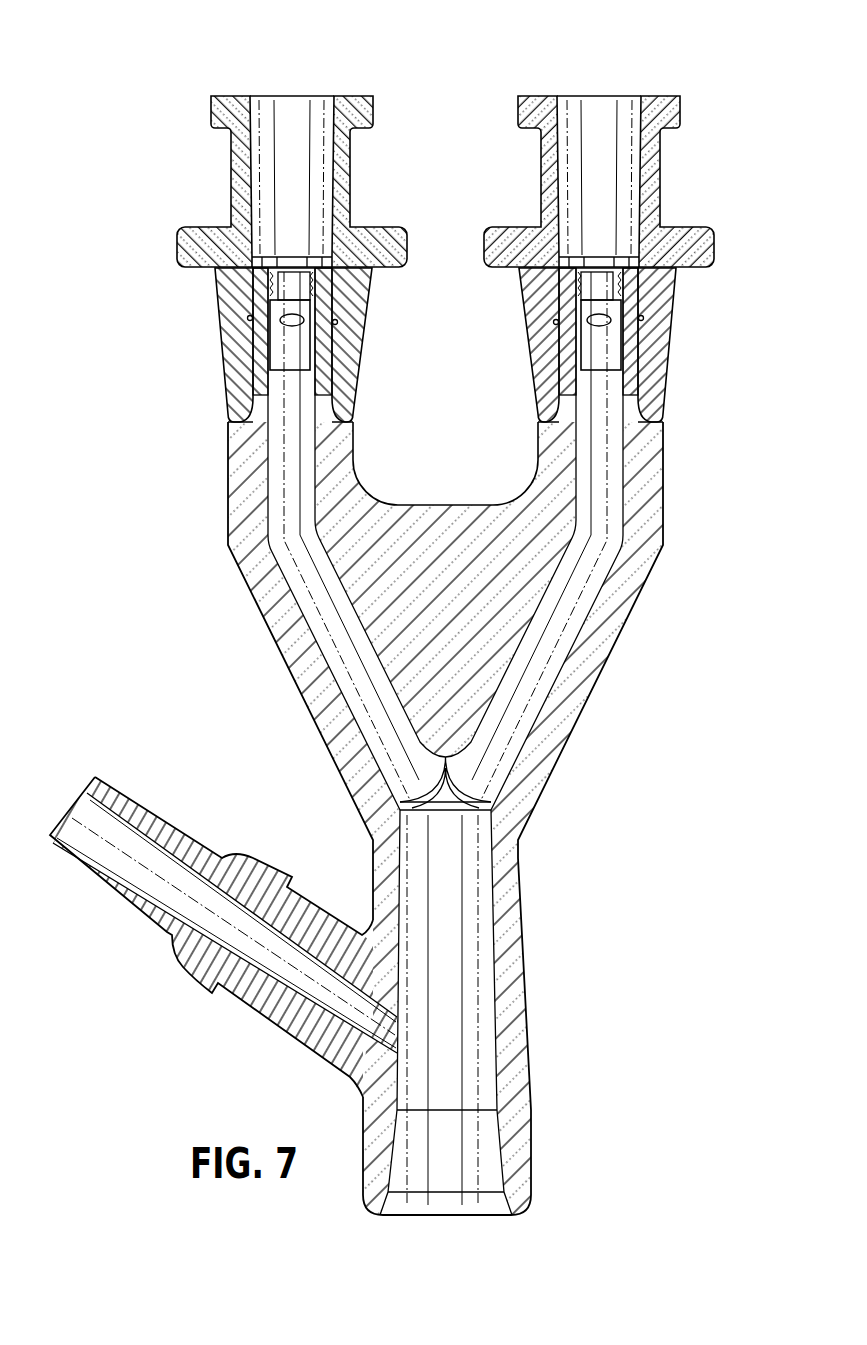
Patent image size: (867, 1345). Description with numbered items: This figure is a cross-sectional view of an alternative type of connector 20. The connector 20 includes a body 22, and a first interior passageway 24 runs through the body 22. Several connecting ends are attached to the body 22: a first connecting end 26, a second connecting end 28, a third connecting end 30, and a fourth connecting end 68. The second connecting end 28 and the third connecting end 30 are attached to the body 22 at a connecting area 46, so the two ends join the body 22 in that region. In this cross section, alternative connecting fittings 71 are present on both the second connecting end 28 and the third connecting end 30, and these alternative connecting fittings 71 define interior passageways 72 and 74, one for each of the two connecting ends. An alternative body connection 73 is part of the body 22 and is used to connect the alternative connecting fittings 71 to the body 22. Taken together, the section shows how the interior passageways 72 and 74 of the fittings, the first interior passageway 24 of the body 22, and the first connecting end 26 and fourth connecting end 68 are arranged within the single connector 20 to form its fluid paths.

The connector 20 is at (552, 52).
The body 22 is at (656, 488).
The first interior passageway 24 is at (304, 594).
The first connecting end 26 is at (446, 1208).
The second connecting end 28 is at (342, 97).
The third connecting end 30 is at (655, 97).
The connecting area 46 is at (230, 302).
The fourth connecting end 68 is at (106, 880).
The alternative connecting fittings 71 is at (231, 170).
The interior passageway 72 is at (280, 194).
The alternative body connection 73 is at (257, 388).
The interior passageway 74 is at (588, 194).